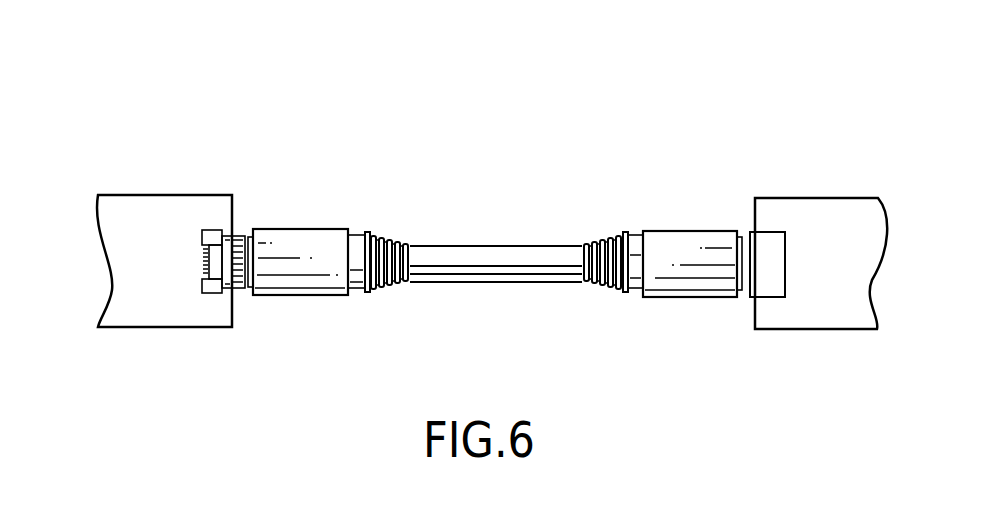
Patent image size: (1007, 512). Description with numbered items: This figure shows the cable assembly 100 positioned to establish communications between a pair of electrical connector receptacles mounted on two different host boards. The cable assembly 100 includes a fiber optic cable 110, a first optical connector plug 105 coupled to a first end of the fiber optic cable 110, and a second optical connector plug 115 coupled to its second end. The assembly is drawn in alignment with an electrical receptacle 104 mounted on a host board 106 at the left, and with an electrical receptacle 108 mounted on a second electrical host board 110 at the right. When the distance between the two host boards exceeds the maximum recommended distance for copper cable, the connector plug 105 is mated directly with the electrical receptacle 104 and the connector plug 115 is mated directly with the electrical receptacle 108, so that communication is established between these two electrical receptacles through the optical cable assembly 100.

The cable assembly 100 is at (463, 192).
The electrical receptacle 104 is at (188, 268).
The first optical connector plug 105 is at (303, 229).
The host board 106 is at (133, 329).
The electrical receptacle 108 is at (762, 298).
The fiber optic cable 110 is at (495, 283).
The second optical connector plug 115 is at (680, 230).